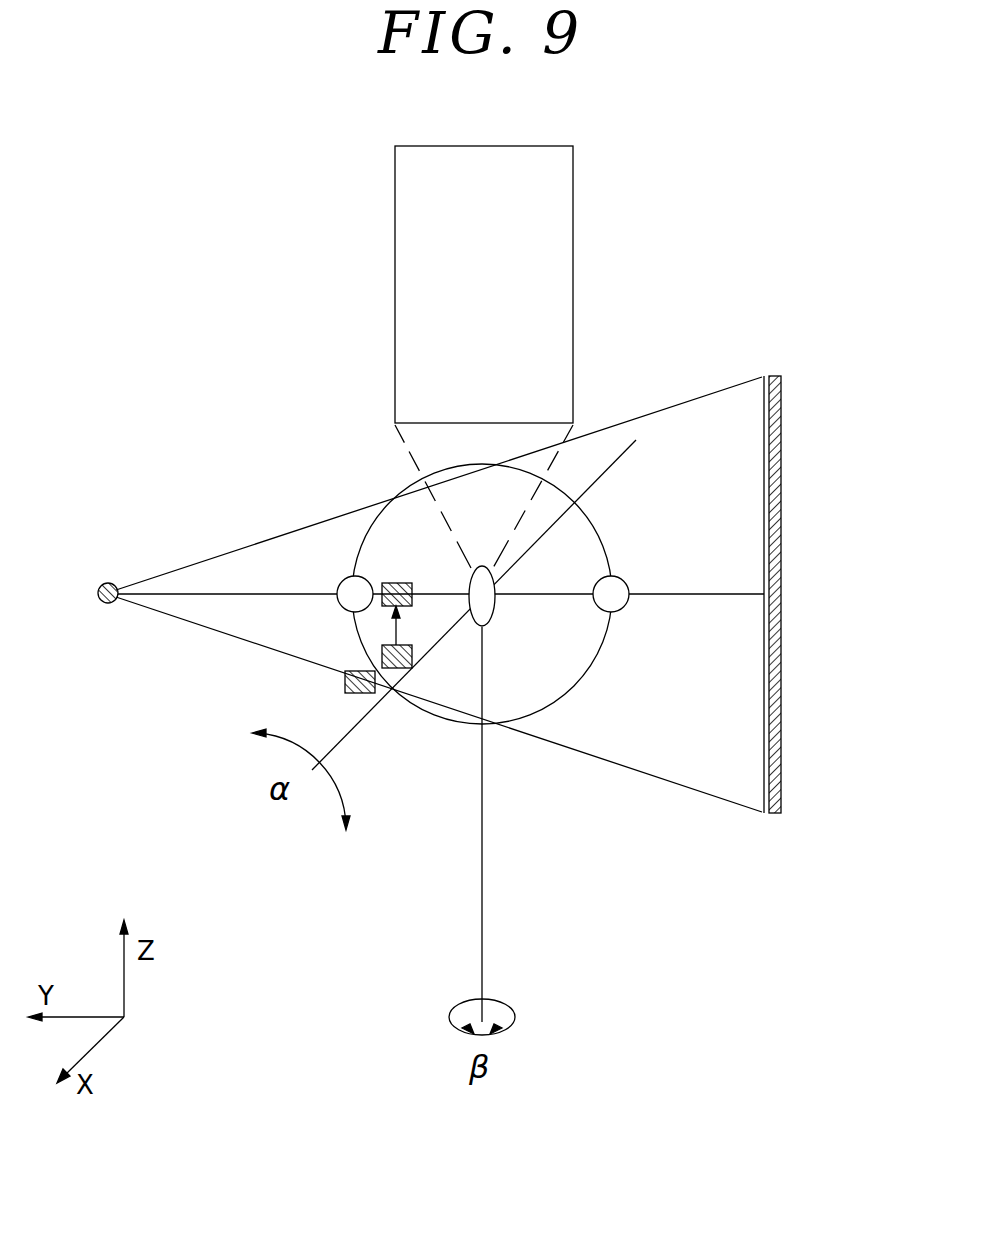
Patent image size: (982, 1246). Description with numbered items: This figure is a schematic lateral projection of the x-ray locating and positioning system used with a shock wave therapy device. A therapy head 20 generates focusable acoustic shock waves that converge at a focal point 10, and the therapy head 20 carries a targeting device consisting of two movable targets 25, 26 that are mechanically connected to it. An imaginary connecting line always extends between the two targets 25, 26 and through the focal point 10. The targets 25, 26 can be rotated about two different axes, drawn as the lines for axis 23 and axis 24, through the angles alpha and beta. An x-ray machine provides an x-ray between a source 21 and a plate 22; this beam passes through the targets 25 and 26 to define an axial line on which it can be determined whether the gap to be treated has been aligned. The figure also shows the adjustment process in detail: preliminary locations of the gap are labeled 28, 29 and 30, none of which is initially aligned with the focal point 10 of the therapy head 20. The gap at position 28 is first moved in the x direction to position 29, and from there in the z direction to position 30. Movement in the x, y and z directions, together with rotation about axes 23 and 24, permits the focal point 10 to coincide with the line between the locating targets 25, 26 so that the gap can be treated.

The focal point 10 is at (502, 607).
The therapy head 20 is at (492, 277).
The source 21 is at (97, 613).
The plate 22 is at (798, 594).
The axis 23 is at (474, 605).
The axis 24 is at (504, 824).
The target 25 is at (338, 582).
The target 26 is at (631, 583).
The preliminary location of gap 28 is at (344, 665).
The preliminary location of gap 29 is at (413, 637).
The preliminary location of gap 30 is at (411, 579).